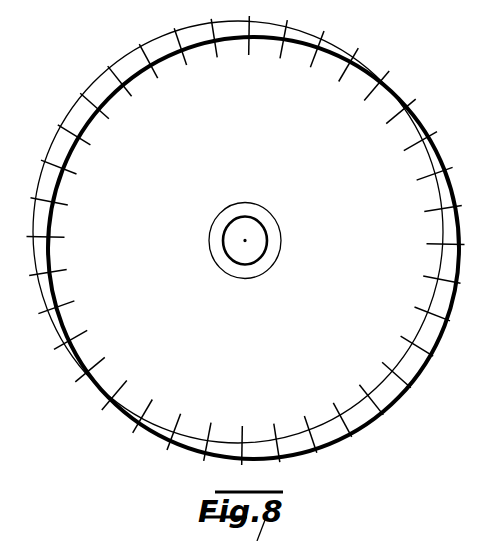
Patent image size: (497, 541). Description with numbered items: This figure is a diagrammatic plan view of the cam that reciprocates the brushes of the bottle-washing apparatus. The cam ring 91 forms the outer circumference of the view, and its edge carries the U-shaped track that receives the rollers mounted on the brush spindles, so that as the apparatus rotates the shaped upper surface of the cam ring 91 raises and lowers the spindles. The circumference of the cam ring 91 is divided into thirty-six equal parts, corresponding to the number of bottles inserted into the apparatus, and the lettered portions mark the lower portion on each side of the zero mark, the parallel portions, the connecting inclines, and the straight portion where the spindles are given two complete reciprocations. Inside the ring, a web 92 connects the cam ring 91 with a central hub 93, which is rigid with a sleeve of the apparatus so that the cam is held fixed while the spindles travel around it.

The cam ring 91 is at (440, 336).
The web 92 is at (252, 241).
The central hub 93 is at (275, 238).